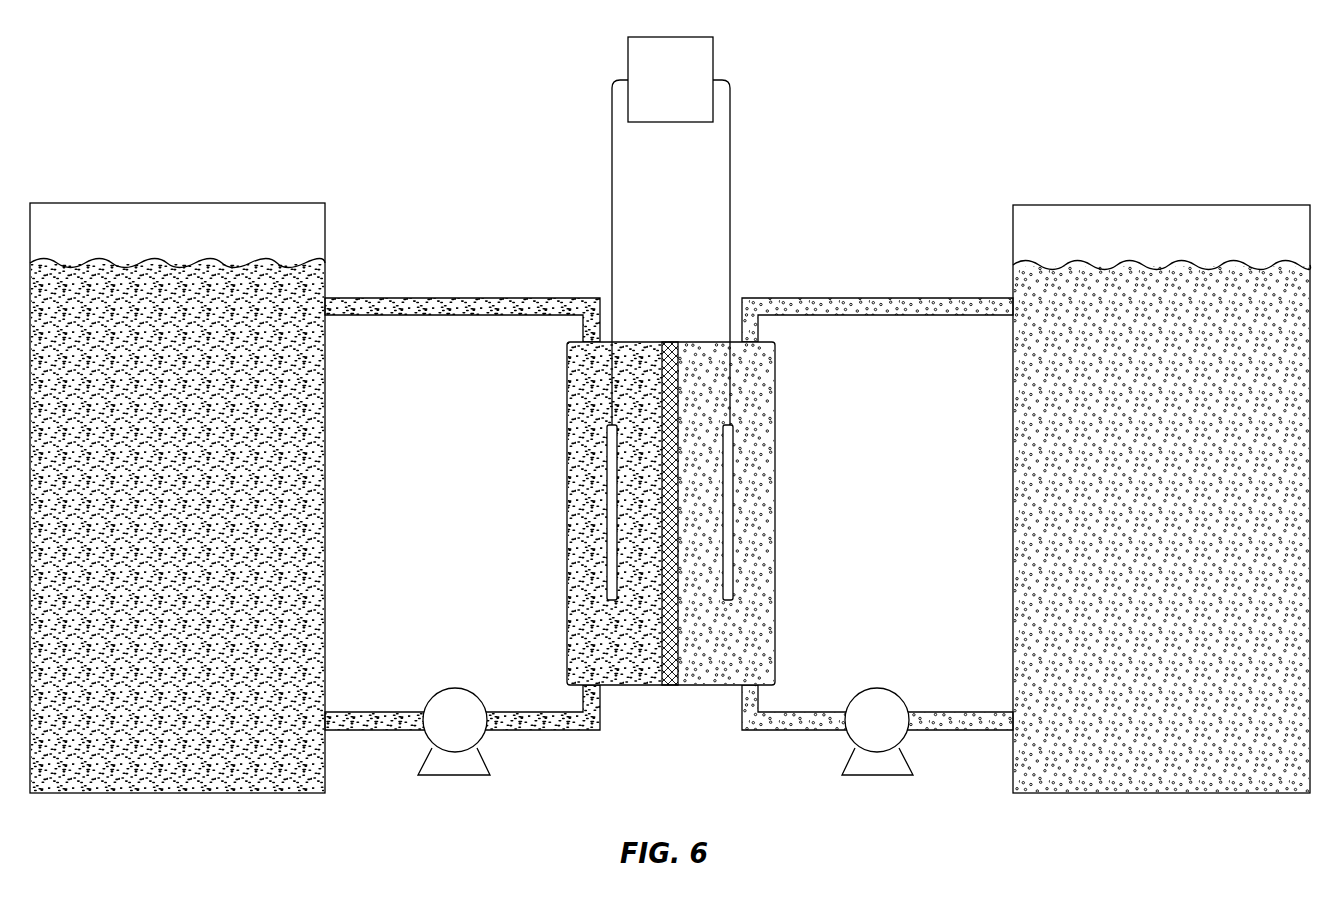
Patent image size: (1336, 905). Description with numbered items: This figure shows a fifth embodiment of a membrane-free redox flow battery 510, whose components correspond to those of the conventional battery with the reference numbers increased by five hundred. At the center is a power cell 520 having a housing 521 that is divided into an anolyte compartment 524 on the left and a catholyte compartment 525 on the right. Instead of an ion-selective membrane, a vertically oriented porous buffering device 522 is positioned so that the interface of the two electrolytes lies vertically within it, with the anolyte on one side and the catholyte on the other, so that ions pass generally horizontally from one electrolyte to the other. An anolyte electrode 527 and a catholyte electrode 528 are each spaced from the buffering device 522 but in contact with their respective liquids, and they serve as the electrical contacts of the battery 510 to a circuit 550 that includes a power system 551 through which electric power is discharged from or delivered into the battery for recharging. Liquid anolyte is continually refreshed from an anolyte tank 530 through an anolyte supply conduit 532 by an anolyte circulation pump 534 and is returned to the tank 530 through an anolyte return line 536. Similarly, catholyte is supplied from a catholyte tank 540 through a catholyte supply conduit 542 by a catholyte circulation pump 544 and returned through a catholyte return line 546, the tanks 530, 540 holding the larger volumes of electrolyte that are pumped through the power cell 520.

The flow battery 510 is at (250, 72).
The power cell 520 is at (695, 361).
The housing 521 is at (778, 560).
The porous buffering device 522 is at (672, 340).
The anolyte compartment 524 is at (635, 662).
The catholyte compartment 525 is at (752, 662).
The anolyte electrode 527 is at (603, 470).
The catholyte electrode 528 is at (735, 470).
The anolyte tank 530 is at (327, 498).
The anolyte supply conduit 532 is at (400, 712).
The anolyte circulation pump 534 is at (488, 768).
The anolyte return line 536 is at (455, 298).
The catholyte tank 540 is at (1010, 498).
The catholyte supply conduit 542 is at (938, 712).
The catholyte circulation pump 544 is at (845, 768).
The catholyte return line 546 is at (885, 298).
The circuit 550 is at (620, 189).
The power system 551 is at (692, 94).